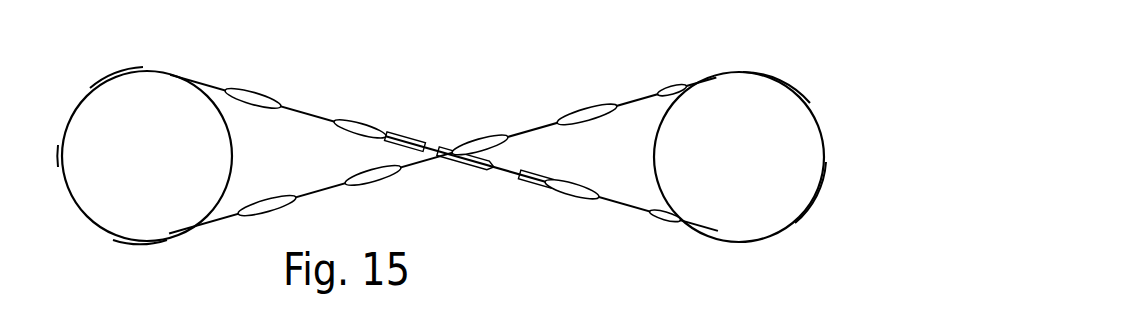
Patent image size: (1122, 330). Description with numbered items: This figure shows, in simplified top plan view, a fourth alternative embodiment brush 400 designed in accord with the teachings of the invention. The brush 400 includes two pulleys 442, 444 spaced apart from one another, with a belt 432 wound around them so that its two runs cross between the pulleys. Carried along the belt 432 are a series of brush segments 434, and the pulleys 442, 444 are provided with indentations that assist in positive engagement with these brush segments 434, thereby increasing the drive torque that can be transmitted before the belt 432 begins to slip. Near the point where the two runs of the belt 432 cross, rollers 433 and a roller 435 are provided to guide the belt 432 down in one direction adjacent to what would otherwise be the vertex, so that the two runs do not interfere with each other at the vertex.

The brush 400 is at (599, 27).
The belt 432 is at (320, 113).
The rollers 433 is at (406, 134).
The brush segments 434 is at (259, 98).
The roller 435 is at (477, 160).
The pulley 442 is at (153, 88).
The pulley 444 is at (744, 233).